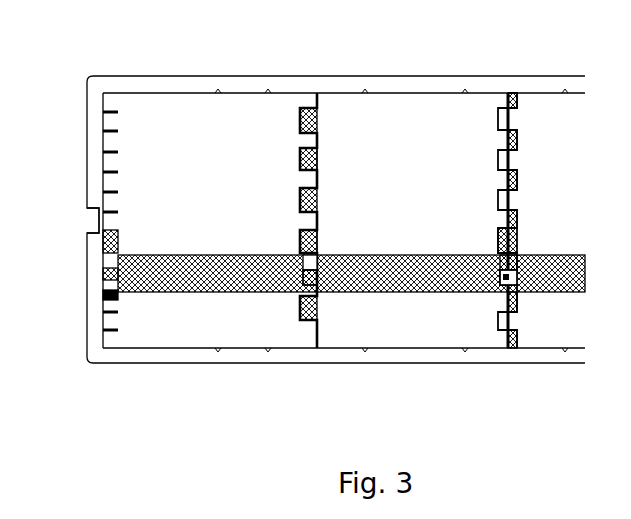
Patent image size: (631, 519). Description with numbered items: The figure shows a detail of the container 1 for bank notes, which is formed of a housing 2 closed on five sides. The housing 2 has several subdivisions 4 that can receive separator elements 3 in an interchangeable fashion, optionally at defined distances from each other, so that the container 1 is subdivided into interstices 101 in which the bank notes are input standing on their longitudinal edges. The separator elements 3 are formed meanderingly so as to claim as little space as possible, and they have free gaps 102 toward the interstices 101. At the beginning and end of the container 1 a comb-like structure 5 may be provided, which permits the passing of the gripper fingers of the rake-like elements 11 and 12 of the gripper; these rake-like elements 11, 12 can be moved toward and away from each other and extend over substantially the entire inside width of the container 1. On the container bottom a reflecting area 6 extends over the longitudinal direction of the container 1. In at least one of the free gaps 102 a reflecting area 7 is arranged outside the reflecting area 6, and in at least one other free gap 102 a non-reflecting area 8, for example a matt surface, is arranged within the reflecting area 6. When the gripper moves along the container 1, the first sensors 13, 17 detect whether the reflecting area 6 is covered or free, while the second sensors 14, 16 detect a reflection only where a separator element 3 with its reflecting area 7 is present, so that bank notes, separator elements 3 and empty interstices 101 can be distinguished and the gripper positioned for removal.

The container 1 is at (71, 214).
The housing 2 is at (93, 322).
The separator element 3 is at (312, 327).
The subdivision 4 is at (218, 95).
The comb-like structure 5 is at (118, 192).
The reflecting area 6 is at (222, 257).
The reflecting area 7 is at (325, 235).
The non-reflecting area 8 is at (300, 253).
The rake-like element 11 is at (318, 163).
The rake-like element 12 is at (500, 140).
The first sensor 13 is at (532, 278).
The second sensor 14 is at (529, 246).
The second sensor 16 is at (334, 238).
The first sensor 17 is at (331, 276).
The interstice 101 is at (240, 128).
The free gap 102 is at (310, 142).